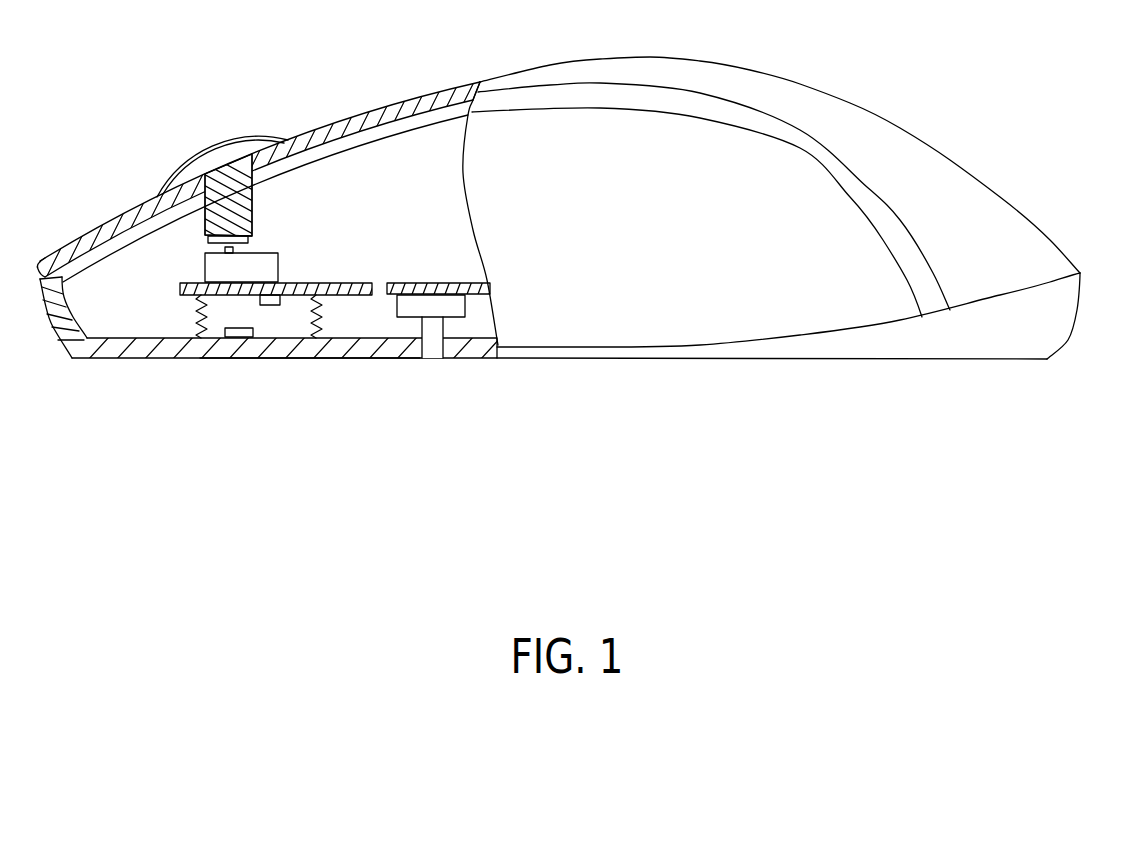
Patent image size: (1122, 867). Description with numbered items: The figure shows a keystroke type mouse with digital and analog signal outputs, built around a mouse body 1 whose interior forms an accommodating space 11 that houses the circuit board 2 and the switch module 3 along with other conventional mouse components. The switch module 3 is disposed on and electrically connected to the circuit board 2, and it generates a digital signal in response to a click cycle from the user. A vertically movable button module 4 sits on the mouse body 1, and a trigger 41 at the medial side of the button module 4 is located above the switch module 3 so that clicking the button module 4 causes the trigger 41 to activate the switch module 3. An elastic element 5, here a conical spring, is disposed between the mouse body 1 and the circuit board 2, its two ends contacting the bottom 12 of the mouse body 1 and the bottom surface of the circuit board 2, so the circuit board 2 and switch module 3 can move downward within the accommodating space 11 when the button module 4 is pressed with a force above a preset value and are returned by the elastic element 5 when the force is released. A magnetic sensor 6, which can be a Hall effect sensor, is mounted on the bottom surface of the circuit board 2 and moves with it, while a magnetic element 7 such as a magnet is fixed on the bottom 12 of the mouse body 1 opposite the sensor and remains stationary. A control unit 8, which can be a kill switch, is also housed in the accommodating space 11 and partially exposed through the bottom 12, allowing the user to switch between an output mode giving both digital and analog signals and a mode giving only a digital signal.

The mouse body 1 is at (214, 367).
The bottom 12 is at (360, 358).
The circuit board 2 is at (364, 273).
The switch module 3 is at (289, 267).
The button module 4 is at (314, 121).
The trigger 41 is at (247, 210).
The elastic element 5 is at (187, 312).
The magnetic sensor 6 is at (252, 300).
The magnetic element 7 is at (262, 329).
The control unit 8 is at (432, 368).
The accommodating space 11 is at (418, 147).